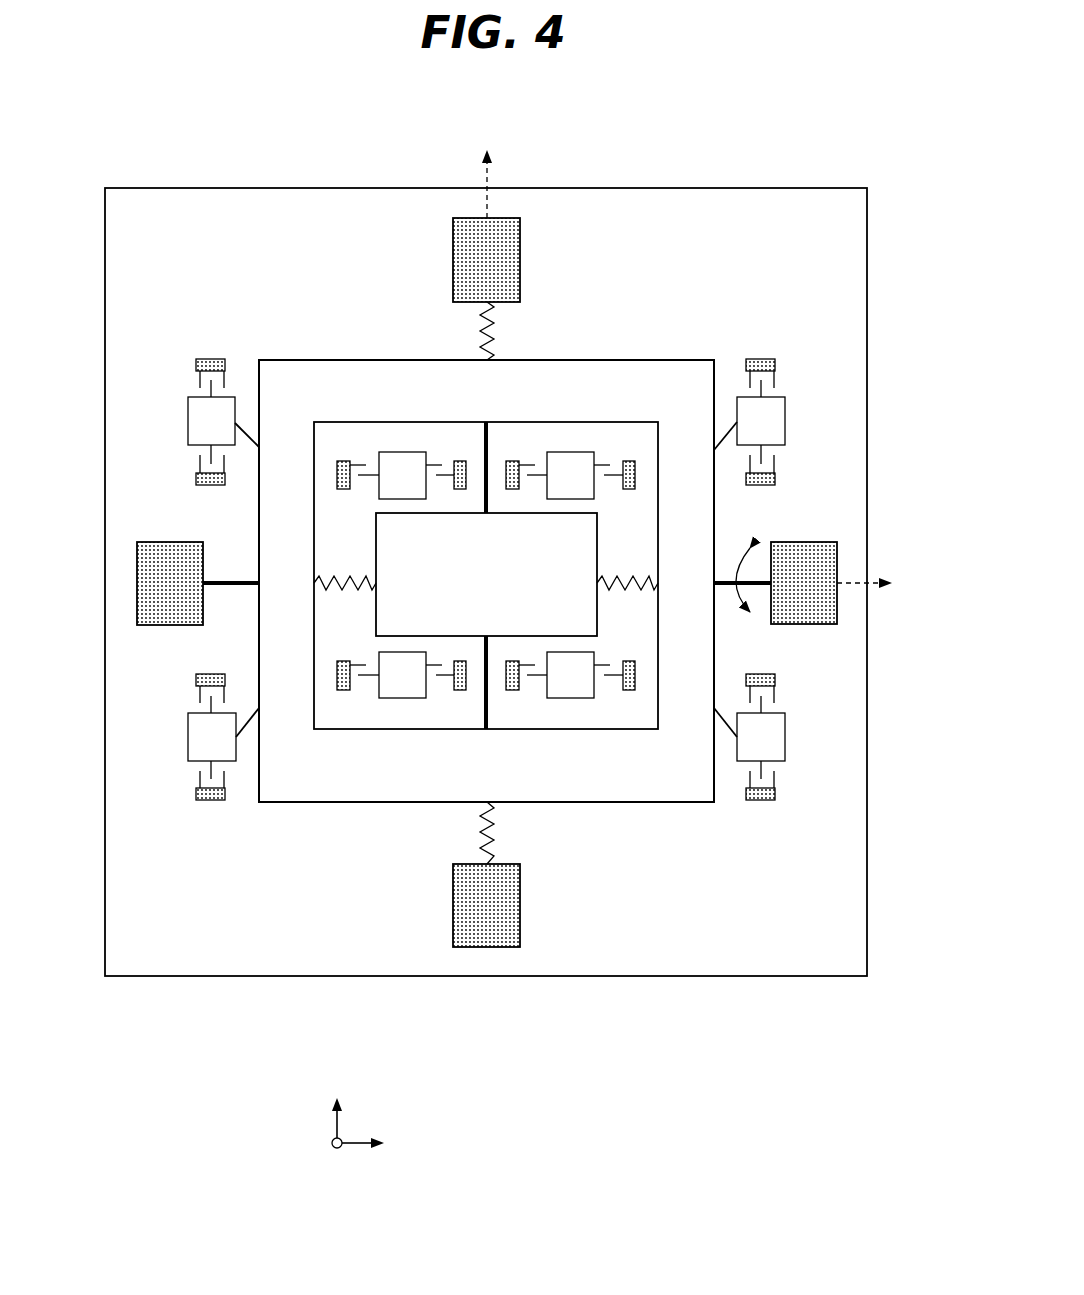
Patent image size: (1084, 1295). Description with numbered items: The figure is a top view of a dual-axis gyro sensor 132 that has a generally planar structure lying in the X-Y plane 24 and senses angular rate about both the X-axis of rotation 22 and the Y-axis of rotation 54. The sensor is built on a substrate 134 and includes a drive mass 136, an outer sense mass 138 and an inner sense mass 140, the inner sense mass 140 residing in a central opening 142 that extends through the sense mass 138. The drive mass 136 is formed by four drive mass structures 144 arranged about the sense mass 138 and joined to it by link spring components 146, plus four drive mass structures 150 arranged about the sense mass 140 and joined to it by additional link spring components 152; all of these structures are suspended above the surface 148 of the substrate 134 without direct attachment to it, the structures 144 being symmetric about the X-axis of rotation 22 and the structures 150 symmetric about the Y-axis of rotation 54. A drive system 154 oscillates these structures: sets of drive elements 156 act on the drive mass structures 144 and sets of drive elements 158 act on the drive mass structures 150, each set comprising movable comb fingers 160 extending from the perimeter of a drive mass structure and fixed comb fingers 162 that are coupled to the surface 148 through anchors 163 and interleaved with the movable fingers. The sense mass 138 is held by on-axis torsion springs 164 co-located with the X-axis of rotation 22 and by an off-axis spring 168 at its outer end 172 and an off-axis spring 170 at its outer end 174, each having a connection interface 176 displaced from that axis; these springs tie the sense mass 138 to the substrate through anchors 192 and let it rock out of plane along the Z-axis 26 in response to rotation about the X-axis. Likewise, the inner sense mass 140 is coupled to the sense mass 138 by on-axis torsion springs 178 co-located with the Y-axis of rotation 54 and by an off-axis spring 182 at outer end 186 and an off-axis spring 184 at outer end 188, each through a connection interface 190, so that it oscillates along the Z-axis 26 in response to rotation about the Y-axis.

The X-axis of rotation 22 is at (860, 581).
The X-Y plane 24 is at (355, 1140).
The Z-axis 26 is at (332, 1143).
The Y-axis of rotation 54 is at (490, 183).
The dual-axis gyro sensor 132 is at (688, 1106).
The substrate 134 is at (215, 188).
The drive mass 136 is at (396, 452).
The sense mass 138 is at (325, 360).
The sense mass 140 is at (475, 590).
The central opening 142 is at (586, 722).
The drive mass structures 144 is at (229, 432).
The link spring components 146 is at (250, 422).
The surface 148 is at (780, 942).
The drive mass structures 150 is at (421, 486).
The link spring components 152 is at (400, 499).
The drive system 154 is at (761, 316).
The drive elements 156 is at (188, 392).
The drive elements 158 is at (516, 448).
The movable comb fingers 160 is at (213, 394).
The fixed comb fingers 162 is at (226, 380).
The anchors 163 is at (215, 359).
The on-axis torsion springs 164 is at (258, 581).
The off-axis spring 168 is at (497, 345).
The off-axis spring 170 is at (494, 837).
The outer end 172 is at (410, 360).
The outer end 174 is at (362, 802).
The connection interface 176 is at (488, 365).
The on-axis torsion springs 178 is at (462, 452).
The off-axis spring 182 is at (336, 582).
The off-axis spring 184 is at (660, 550).
The outer end 186 is at (376, 560).
The outer end 188 is at (658, 638).
The connection interface 190 is at (378, 583).
The anchors 192 is at (462, 232).